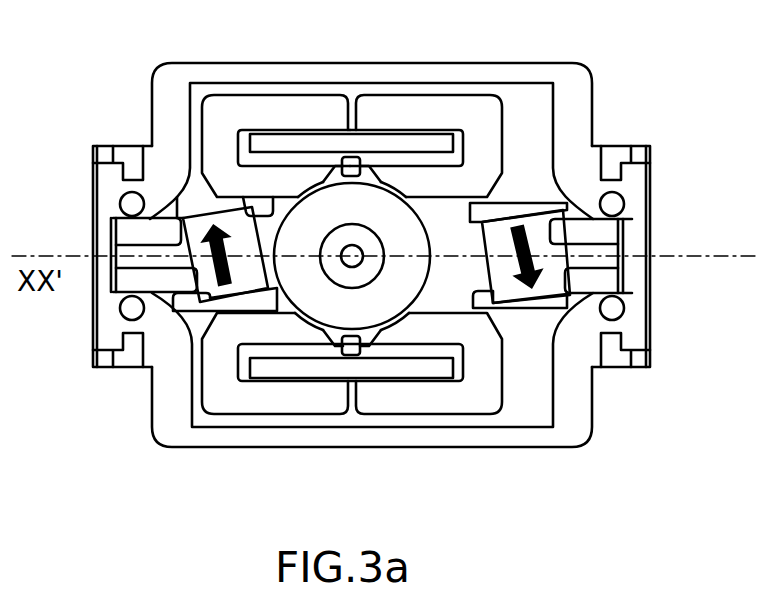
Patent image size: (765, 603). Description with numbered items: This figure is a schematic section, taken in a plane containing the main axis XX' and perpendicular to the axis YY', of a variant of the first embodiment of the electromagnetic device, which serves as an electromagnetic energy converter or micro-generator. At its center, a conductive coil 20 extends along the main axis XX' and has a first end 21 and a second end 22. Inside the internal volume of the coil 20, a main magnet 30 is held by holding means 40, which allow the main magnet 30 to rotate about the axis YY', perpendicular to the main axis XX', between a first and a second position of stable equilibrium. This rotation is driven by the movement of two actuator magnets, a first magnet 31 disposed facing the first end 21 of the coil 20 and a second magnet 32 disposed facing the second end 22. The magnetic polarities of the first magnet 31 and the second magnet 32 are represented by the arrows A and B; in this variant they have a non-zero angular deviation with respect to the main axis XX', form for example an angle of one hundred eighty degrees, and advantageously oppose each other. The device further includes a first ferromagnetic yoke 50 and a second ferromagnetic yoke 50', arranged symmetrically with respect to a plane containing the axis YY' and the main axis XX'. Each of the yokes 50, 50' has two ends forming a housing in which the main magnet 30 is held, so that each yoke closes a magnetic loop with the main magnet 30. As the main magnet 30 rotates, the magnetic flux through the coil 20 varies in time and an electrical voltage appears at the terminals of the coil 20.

The conductive coil 20 is at (293, 137).
The first end 21 is at (243, 133).
The second end 22 is at (458, 133).
The main magnet 30 is at (320, 298).
The first magnet 31 is at (210, 287).
The second magnet 32 is at (513, 290).
The holding means 40 is at (359, 260).
The first ferromagnetic yoke 50 is at (352, 100).
The second ferromagnetic yoke 50' is at (333, 415).
The arrow A is at (181, 236).
The arrow B is at (550, 233).